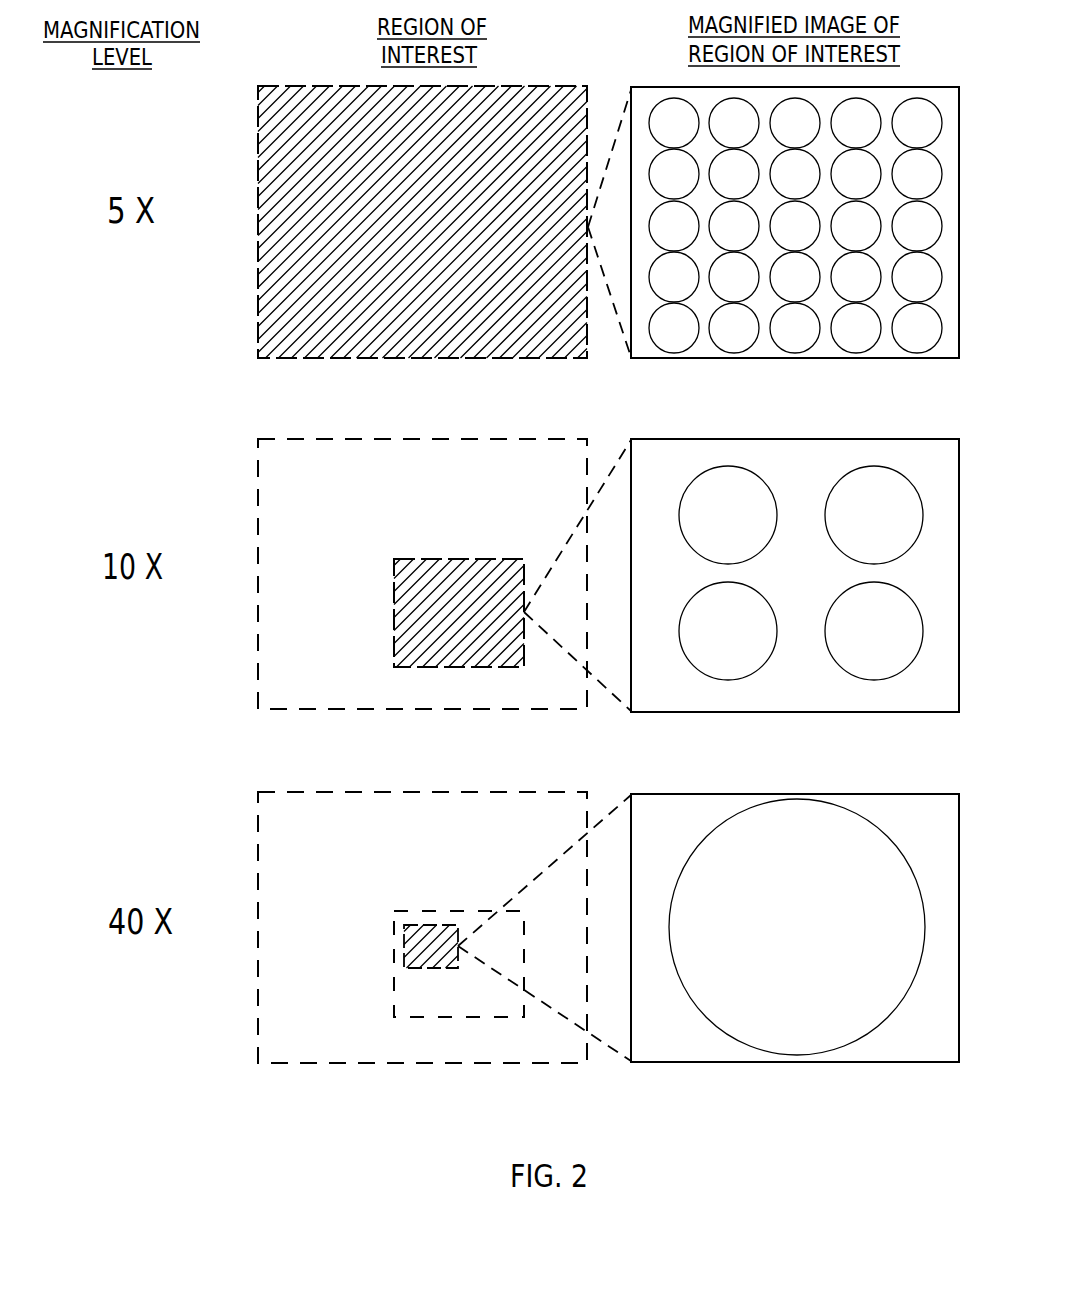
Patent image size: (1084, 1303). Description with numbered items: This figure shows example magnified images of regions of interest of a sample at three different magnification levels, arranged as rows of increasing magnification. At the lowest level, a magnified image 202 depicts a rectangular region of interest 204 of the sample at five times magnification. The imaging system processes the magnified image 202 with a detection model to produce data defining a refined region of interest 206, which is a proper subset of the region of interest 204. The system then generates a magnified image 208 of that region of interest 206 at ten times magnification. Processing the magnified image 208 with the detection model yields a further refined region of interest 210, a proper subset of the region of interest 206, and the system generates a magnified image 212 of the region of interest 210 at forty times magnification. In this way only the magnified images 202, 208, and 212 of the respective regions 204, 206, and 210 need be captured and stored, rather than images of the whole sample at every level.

The magnified image 202 is at (812, 393).
The region of interest 204 is at (431, 391).
The refined region of interest 206 is at (475, 693).
The magnified image 208 is at (817, 746).
The refined region of interest 210 is at (449, 996).
The magnified image 212 is at (812, 1095).